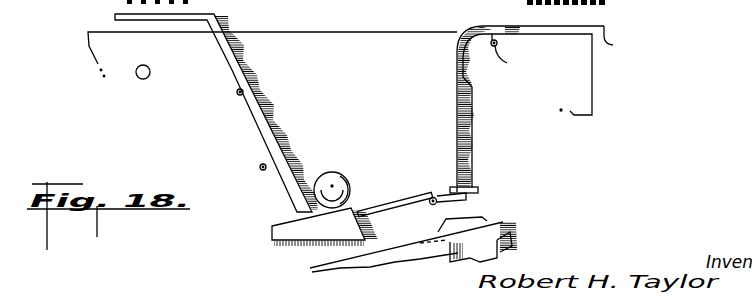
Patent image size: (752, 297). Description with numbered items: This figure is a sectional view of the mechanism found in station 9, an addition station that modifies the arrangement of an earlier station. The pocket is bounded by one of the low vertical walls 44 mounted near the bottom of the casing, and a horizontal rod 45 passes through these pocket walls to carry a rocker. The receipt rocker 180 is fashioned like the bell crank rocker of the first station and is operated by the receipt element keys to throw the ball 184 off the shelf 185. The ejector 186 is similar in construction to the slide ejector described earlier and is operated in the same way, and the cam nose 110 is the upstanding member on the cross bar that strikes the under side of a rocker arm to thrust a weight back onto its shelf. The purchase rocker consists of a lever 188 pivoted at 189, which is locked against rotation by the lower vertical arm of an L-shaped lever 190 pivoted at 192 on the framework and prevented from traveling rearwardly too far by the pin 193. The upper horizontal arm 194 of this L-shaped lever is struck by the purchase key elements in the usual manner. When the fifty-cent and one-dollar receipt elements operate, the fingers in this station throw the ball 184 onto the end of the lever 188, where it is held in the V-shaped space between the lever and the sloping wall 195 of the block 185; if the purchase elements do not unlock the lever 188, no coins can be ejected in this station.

The station 9 is at (143, 71).
The low vertical walls 44 is at (583, 86).
The horizontal rod 45 is at (237, 90).
The cam nose 110 is at (456, 220).
The receipt rocker 180 is at (241, 117).
The ball 184 is at (333, 173).
The shelf 185 is at (289, 232).
The ejector 186 is at (503, 221).
The lever 188 is at (394, 206).
The pivot 189 is at (443, 206).
The L-shaped lever 190 is at (464, 152).
The pivot 192 is at (503, 78).
The pin 193 is at (478, 136).
The upper horizontal arm 194 is at (625, 42).
The sloping wall 195 is at (370, 236).